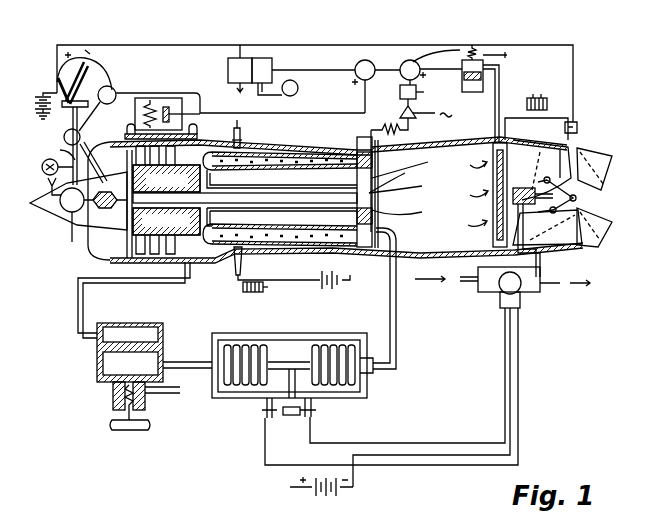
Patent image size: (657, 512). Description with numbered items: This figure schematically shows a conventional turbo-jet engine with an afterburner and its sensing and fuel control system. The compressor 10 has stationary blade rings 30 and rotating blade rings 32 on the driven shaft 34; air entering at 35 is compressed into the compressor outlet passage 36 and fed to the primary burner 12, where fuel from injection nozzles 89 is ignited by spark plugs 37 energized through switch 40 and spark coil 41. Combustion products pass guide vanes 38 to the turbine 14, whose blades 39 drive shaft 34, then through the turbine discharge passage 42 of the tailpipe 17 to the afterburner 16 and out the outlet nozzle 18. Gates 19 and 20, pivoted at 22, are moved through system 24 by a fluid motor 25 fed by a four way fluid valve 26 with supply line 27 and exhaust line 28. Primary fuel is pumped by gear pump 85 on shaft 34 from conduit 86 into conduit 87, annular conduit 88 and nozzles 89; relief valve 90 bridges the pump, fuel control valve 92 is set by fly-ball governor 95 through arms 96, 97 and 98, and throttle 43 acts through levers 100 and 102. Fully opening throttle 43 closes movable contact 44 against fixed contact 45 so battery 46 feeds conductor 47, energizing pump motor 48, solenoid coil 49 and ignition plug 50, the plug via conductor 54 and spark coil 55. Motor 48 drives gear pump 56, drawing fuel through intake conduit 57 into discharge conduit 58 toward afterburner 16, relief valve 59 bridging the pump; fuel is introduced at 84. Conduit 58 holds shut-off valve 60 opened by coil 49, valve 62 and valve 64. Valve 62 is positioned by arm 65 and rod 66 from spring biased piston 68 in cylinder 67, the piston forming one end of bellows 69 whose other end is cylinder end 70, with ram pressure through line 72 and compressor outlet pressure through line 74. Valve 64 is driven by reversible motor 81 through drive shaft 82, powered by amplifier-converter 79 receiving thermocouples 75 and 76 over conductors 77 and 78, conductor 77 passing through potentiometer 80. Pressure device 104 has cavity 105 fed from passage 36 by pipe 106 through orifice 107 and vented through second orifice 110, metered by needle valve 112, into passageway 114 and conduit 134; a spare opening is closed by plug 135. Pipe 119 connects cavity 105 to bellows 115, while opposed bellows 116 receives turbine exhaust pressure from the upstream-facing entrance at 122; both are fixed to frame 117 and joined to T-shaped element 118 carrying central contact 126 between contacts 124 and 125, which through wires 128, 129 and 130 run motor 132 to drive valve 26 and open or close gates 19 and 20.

The compressor 10 is at (153, 268).
The primary burner 12 is at (287, 142).
The turbine 14 is at (348, 257).
The afterburner 16 is at (542, 170).
The tailpipe 17 is at (429, 271).
The outlet nozzle 18 is at (611, 170).
The gate 19 is at (598, 152).
The gate 20 is at (596, 246).
The pivot 22 is at (594, 227).
The gate operating system 24 is at (552, 213).
The fluid motor 25 is at (533, 186).
The four way fluid valve 26 is at (500, 294).
The fluid supply line 27 is at (472, 285).
The exhaust line 28 is at (565, 274).
The stationary blade rings 30 is at (180, 244).
The rotating blade rings 32 is at (166, 221).
The driven shaft 34 is at (166, 178).
The air inlet 35 is at (93, 258).
The compressor outlet passage 36 is at (215, 285).
The spark plugs 37 is at (262, 134).
The guide vanes 38 is at (303, 145).
The turbine blades 39 is at (362, 137).
The switch 40 is at (266, 286).
The spark coil 41 is at (253, 293).
The turbine discharge passage 42 is at (460, 138).
The throttle 43 is at (90, 64).
The movable contact 44 is at (58, 76).
The fixed contact 45 is at (56, 62).
The battery 46 is at (35, 101).
The conductor 47 is at (195, 58).
The pump motor 48 is at (228, 70).
The solenoid coil 49 is at (460, 50).
The ignition plug 50 is at (508, 142).
The conductor 54 is at (577, 122).
The spark coil 55 is at (537, 98).
The rotary gear pump 56 is at (273, 64).
The intake conduit 57 is at (262, 96).
The discharge conduit 58 is at (355, 62).
The relief valve 59 is at (299, 92).
The shut-off valve 60 is at (462, 88).
The control valve 62 is at (370, 60).
The control valve 64 is at (414, 60).
The arm 65 is at (350, 88).
The rod 66 is at (340, 148).
The airtight cylinder 67 is at (178, 98).
The spring biased piston 68 is at (166, 105).
The bellows 69 is at (150, 98).
The cylinder end 70 is at (135, 112).
The ram air line 72 is at (125, 136).
The compressor outlet pressure line 74 is at (163, 202).
The thermocouple 75 is at (410, 165).
The thermocouple 76 is at (406, 209).
The conductor 77 is at (396, 178).
The conductor 78 is at (405, 184).
The amplifier-converter 79 is at (418, 118).
The potentiometer 80 is at (393, 165).
The reversible variable-speed motor 81 is at (400, 92).
The drive shaft 82 is at (429, 95).
The fuel introduction point 84 is at (470, 193).
The rotary gear pump 85 is at (50, 220).
The conduit 86 is at (64, 236).
The conduit 87 is at (46, 185).
The annular conduit 88 is at (166, 231).
The fuel injection nozzles 89 is at (234, 140).
The relief valve 90 is at (42, 166).
The fuel control valve 92 is at (78, 123).
The fly-ball governor 95 is at (105, 210).
The arm 96 is at (80, 158).
The arm 97 is at (56, 148).
The arm 98 is at (100, 170).
The lever 100 is at (96, 67).
The lever 102 is at (118, 93).
The variable comparison pressure device 104 is at (92, 344).
The central cavity 105 is at (100, 357).
The pipe 106 is at (125, 282).
The orifice 107 is at (160, 340).
The second orifice 110 is at (131, 363).
The needle valve 112 is at (113, 392).
The passageway 114 is at (112, 426).
The bellows 115 is at (238, 343).
The bellows 116 is at (356, 340).
The frame 117 is at (222, 400).
The T-shaped element 118 is at (300, 361).
The pipe 119 is at (186, 361).
The upstream-facing entrance 122 is at (402, 232).
The contact 124 is at (266, 420).
The contact 125 is at (316, 410).
The central contact 126 is at (292, 440).
The wire 128 is at (462, 455).
The wire 129 is at (460, 465).
The wire 130 is at (430, 443).
The motor 132 is at (522, 303).
The conduit 134 is at (176, 394).
The threaded plug 135 is at (285, 493).